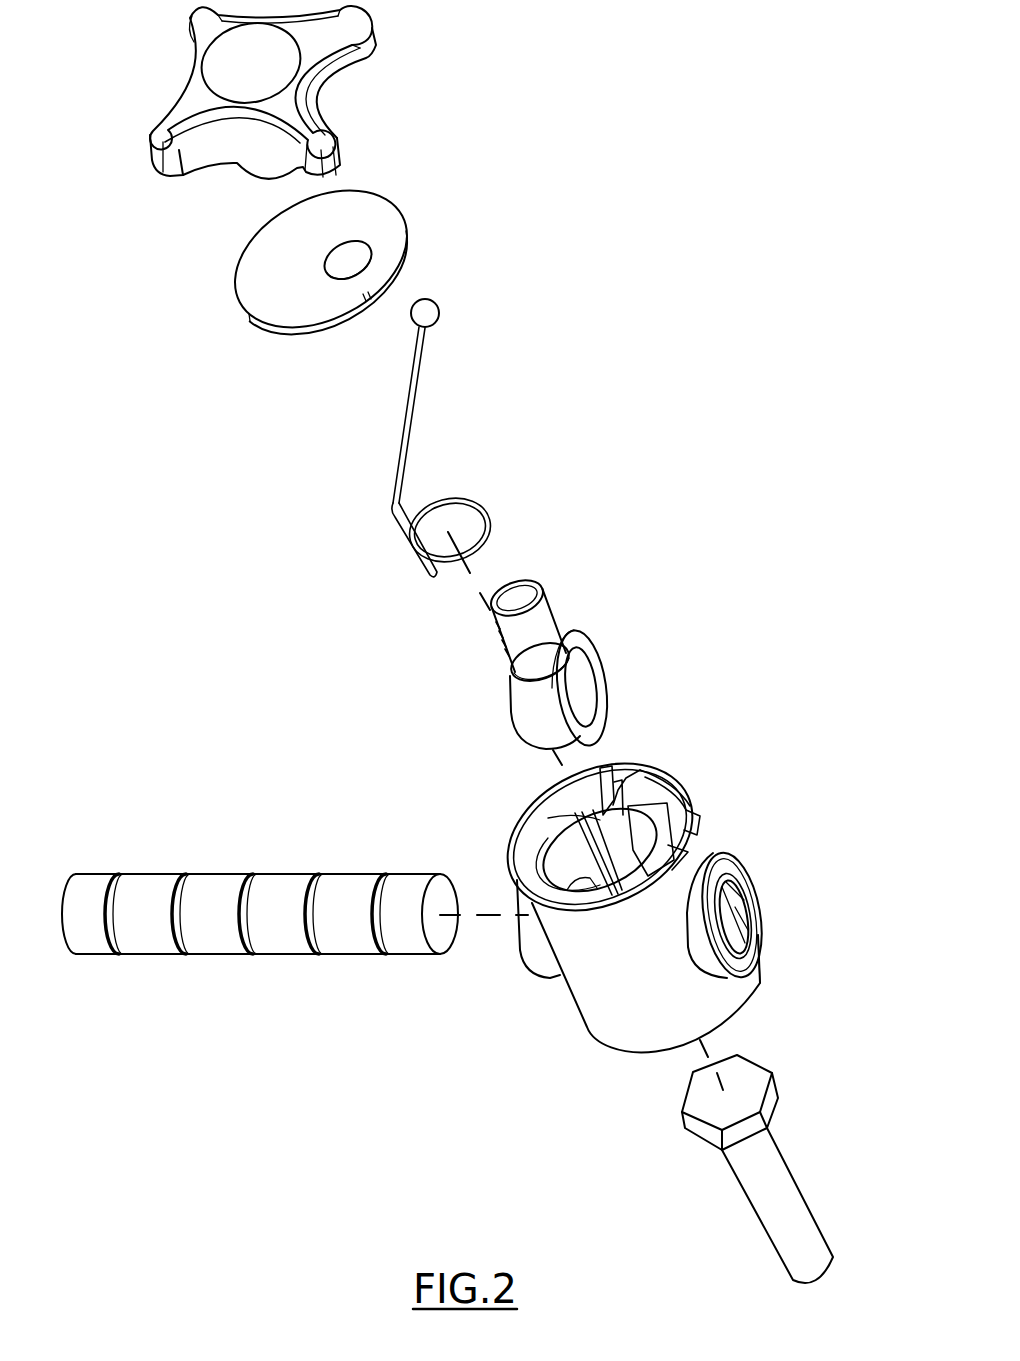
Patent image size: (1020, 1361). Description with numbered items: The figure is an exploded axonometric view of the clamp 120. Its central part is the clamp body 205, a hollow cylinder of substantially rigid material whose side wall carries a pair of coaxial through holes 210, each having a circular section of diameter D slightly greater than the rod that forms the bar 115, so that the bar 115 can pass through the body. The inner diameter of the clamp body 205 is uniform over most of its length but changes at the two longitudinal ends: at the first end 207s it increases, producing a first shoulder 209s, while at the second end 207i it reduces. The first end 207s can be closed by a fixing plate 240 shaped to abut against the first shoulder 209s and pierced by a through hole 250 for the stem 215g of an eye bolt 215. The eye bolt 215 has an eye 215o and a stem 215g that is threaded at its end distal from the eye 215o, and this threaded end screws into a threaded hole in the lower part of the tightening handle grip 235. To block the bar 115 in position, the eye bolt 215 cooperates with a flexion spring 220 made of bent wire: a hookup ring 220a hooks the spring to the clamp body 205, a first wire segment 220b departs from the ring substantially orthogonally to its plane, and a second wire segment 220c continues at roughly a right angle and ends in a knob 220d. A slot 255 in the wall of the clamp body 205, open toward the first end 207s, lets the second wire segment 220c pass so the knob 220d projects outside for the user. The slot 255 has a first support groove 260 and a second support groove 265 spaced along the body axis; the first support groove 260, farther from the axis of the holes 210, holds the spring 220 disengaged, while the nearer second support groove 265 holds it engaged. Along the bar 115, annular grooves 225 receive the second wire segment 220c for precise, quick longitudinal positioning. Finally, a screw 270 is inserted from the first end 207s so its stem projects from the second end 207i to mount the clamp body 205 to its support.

The clamp 120 is at (143, 76).
The tightening handle grip 235 is at (343, 62).
The fixing plate 240 is at (388, 242).
The through hole 250 is at (343, 272).
The flexion spring 220 is at (372, 487).
The hookup ring 220a is at (492, 518).
The first wire segment 220b is at (420, 557).
The second wire segment 220c is at (423, 408).
The knob 220d is at (440, 312).
The eye bolt 215 is at (494, 670).
The stem 215g is at (535, 598).
The eye 215o is at (602, 650).
The slot 255 is at (616, 764).
The first support groove 260 is at (566, 783).
The second support groove 265 is at (583, 820).
The first shoulder 209s is at (680, 796).
The first end 207s is at (690, 802).
The coaxial holes 210 is at (740, 860).
The diameter D is at (758, 910).
The second end 207i is at (768, 994).
The clamp body 205 is at (593, 1016).
The screw 270 is at (796, 1082).
The bar 115 is at (95, 873).
The grooves 225 is at (183, 873).